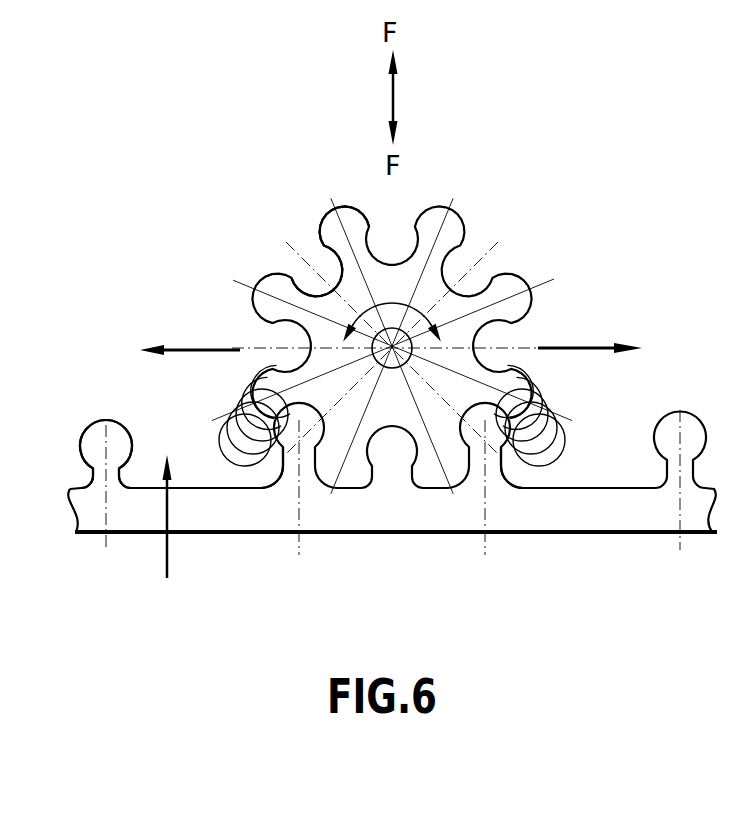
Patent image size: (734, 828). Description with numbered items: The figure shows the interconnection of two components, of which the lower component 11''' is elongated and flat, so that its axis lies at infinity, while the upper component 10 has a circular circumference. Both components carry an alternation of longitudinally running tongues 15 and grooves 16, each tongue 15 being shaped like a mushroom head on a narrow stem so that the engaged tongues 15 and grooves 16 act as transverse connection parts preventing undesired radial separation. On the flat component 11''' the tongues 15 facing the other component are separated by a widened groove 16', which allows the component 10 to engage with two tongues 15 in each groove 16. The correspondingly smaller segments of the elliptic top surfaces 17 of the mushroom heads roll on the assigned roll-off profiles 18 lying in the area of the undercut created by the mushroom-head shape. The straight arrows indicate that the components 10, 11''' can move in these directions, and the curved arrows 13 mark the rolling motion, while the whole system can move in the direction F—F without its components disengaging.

The component 10 is at (450, 298).
The rotation arrows 13 is at (448, 352).
The tongue 15 is at (322, 201).
The groove 16 is at (281, 240).
The widened groove 16' is at (168, 537).
The top surface 17 is at (318, 493).
The roll-off profile 18 is at (473, 487).
The component 11''' is at (392, 513).